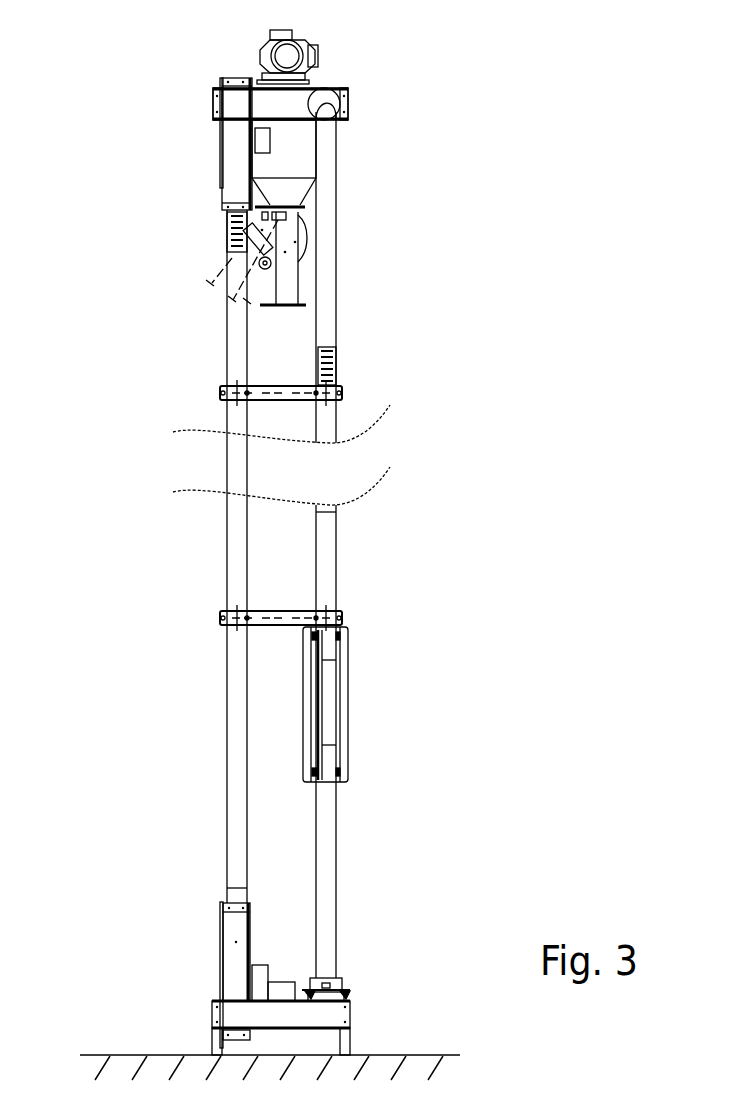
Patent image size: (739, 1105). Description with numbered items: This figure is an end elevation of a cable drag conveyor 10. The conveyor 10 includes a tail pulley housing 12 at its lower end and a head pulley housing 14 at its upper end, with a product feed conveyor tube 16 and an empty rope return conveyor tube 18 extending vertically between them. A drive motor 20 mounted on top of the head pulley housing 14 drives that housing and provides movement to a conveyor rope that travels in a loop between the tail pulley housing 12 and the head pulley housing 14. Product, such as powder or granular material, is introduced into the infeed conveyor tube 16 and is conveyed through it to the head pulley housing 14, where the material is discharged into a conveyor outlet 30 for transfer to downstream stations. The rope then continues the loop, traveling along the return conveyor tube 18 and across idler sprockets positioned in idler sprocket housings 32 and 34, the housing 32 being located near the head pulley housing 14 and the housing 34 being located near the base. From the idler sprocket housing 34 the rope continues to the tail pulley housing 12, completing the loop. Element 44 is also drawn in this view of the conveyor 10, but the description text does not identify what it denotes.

The cable drag conveyor 10 is at (133, 561).
The tail pulley housing 12 is at (240, 1017).
The head pulley housing 14 is at (265, 98).
The product feed conveyor tube 16 is at (325, 532).
The empty rope return conveyor tube 18 is at (237, 752).
The drive motor 20 is at (292, 55).
The conveyor outlet 30 is at (297, 170).
The idler sprocket housing 32 is at (232, 141).
The idler sprocket housing 34 is at (222, 980).
The drive blocks 44 is at (287, 988).